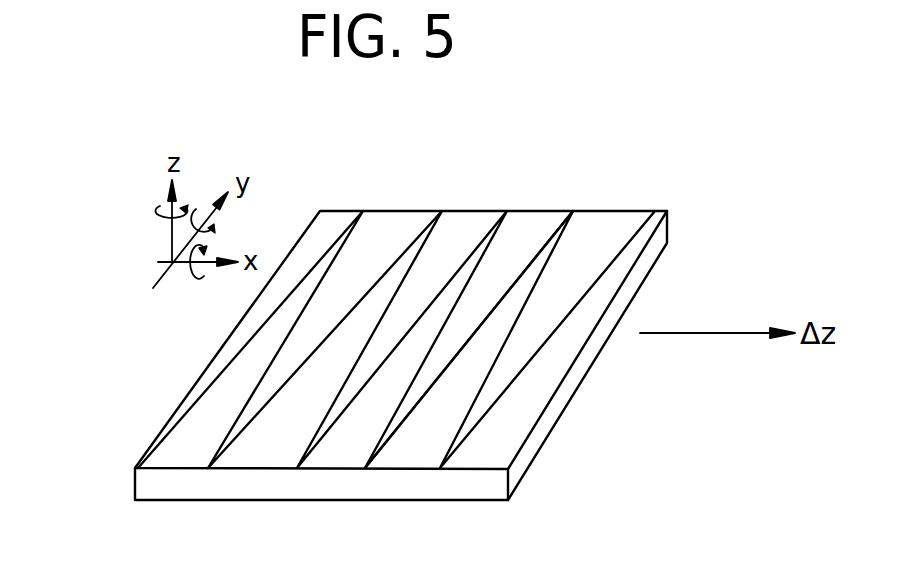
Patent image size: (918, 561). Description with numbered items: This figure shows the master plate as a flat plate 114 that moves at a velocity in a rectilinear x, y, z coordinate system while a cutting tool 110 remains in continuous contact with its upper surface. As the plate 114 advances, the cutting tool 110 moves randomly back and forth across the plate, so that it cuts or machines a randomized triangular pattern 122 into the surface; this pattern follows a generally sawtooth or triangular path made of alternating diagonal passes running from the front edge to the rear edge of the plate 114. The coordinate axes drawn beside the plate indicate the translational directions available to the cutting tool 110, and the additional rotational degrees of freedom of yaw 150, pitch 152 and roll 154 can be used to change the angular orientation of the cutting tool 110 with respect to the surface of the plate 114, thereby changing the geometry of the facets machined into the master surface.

The cutting tool 110 is at (409, 312).
The flat plate 114 is at (668, 230).
The randomized triangular pattern 122 is at (543, 253).
The yaw 150 is at (163, 218).
The pitch 152 is at (217, 220).
The roll 154 is at (187, 273).